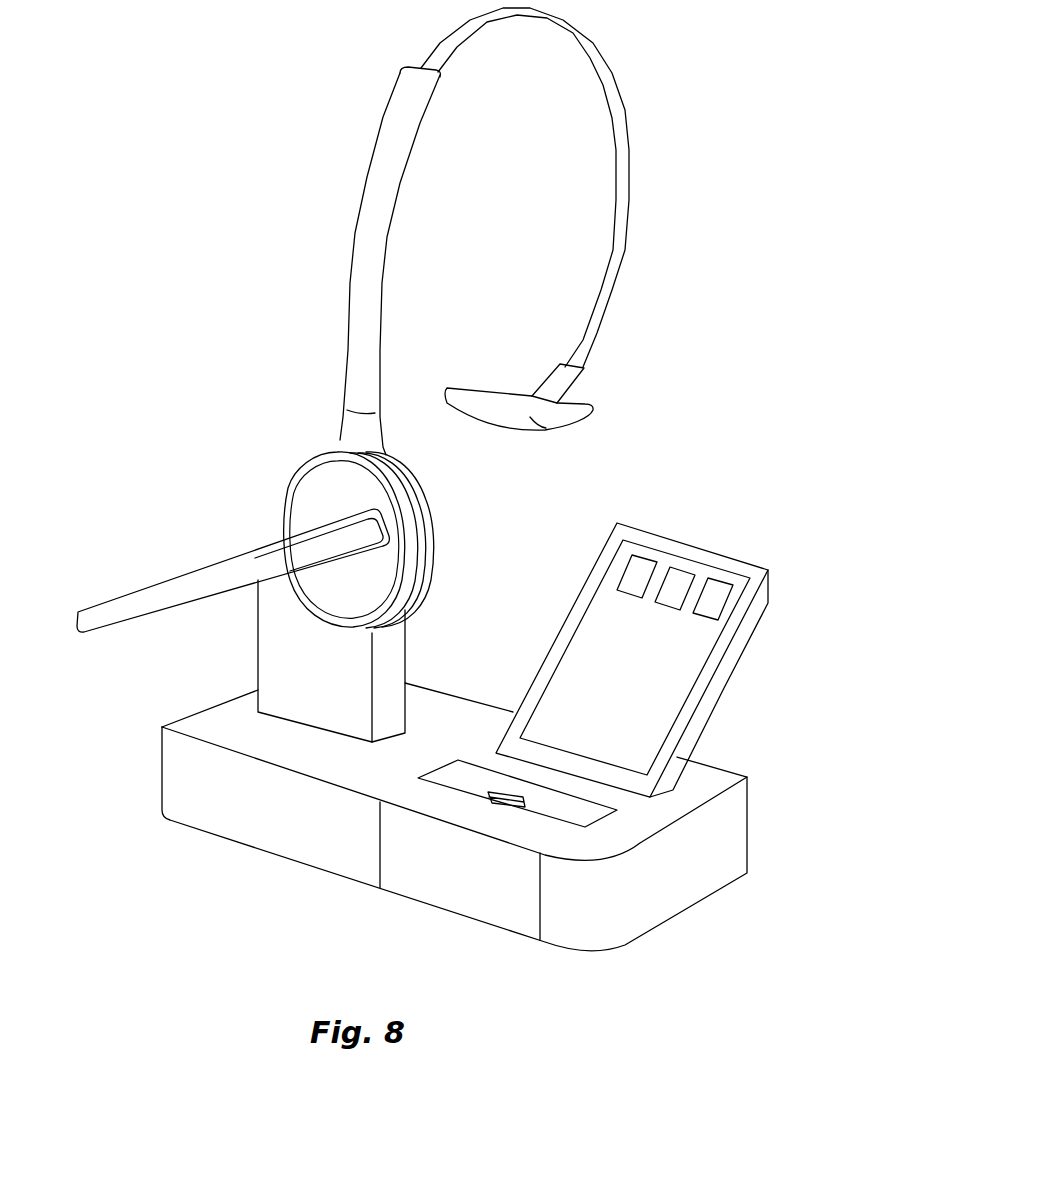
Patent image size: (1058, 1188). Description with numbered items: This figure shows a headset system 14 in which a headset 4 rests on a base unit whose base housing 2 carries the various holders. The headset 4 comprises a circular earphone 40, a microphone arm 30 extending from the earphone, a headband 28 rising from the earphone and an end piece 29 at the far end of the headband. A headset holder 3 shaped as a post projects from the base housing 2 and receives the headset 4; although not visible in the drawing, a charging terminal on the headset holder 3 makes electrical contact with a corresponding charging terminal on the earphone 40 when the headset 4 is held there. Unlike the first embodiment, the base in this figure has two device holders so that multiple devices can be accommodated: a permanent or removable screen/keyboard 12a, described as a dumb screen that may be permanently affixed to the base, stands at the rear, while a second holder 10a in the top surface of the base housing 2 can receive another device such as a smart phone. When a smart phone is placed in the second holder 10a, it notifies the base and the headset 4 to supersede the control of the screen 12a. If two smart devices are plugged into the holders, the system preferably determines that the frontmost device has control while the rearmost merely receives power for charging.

The headband 28 is at (607, 78).
The headset 4 is at (365, 330).
The end piece 29 is at (593, 440).
The circular earphone 40 is at (307, 495).
The microphone arm 30 is at (165, 593).
The headset holder 3 is at (318, 686).
The base housing 2 is at (255, 807).
The screen/keyboard 12a is at (677, 695).
The second holder 10a is at (600, 815).
The headset system 14 is at (692, 972).